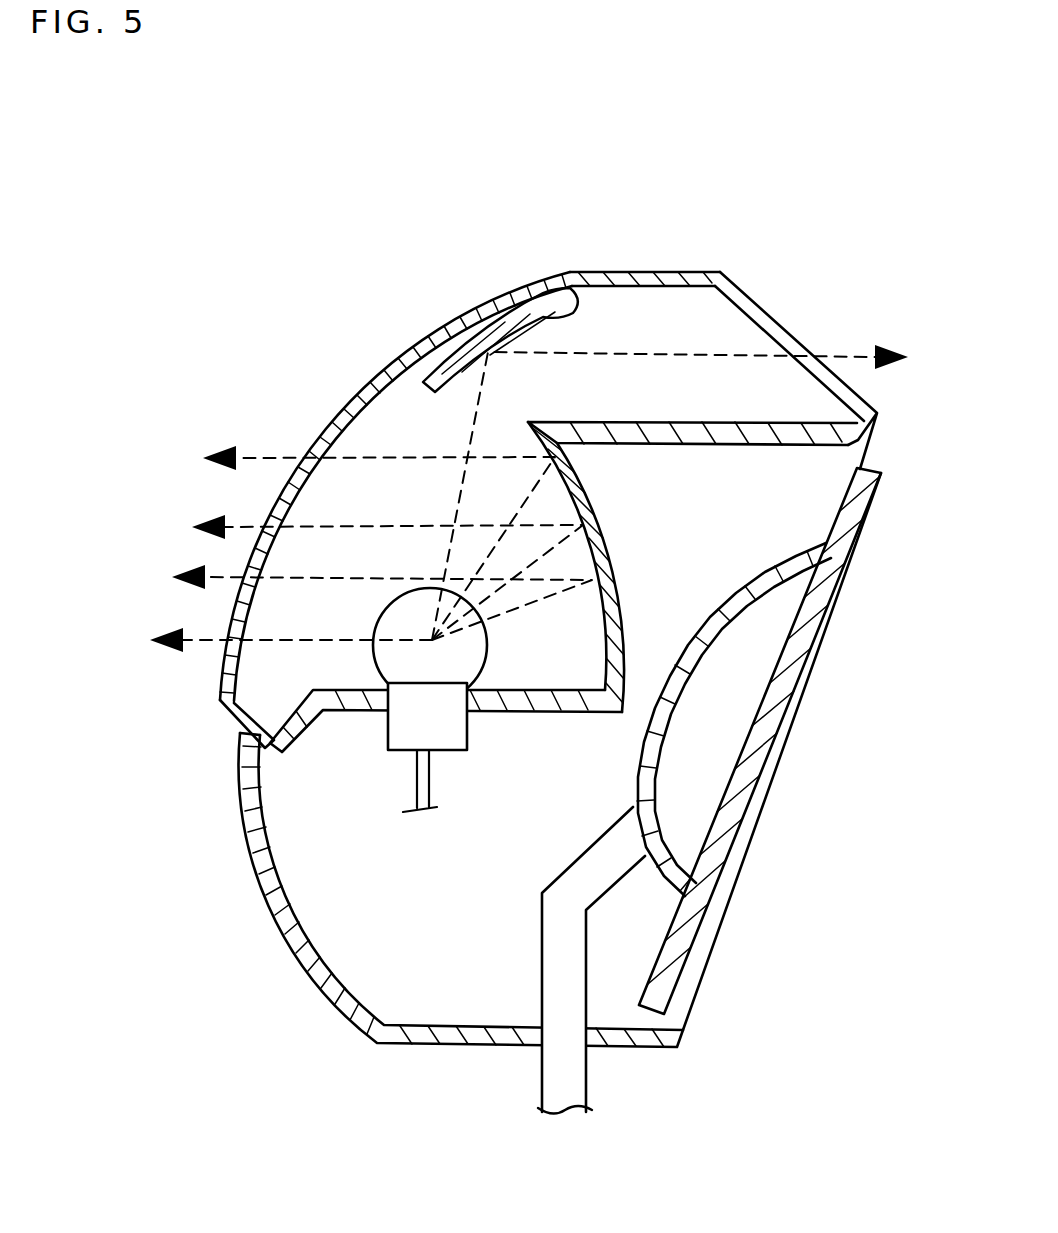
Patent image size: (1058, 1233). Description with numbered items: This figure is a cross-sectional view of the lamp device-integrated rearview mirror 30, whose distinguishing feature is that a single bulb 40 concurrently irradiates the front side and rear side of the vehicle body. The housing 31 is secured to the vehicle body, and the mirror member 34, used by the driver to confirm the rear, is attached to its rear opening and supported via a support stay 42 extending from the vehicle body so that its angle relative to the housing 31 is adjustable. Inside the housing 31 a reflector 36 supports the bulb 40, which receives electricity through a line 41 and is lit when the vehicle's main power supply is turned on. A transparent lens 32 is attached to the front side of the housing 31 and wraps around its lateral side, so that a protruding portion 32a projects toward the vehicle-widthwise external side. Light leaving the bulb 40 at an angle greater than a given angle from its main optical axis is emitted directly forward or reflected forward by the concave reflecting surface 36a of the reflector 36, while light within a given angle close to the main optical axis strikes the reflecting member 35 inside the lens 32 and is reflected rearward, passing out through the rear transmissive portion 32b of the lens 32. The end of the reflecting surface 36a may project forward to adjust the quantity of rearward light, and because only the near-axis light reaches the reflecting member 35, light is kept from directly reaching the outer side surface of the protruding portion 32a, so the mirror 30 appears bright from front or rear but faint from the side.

The rearview mirror 30 is at (472, 127).
The housing 31 is at (278, 905).
The lens 32 is at (353, 400).
The protruding portion 32a is at (690, 243).
The rear transmissive portion 32b is at (806, 328).
The mirror member 34 is at (767, 733).
The reflecting member 35 is at (583, 270).
The reflector 36 is at (508, 712).
The reflecting surface 36a is at (598, 633).
The bulb 40 is at (377, 662).
The line 41 is at (415, 788).
The support stay 42 is at (552, 1070).